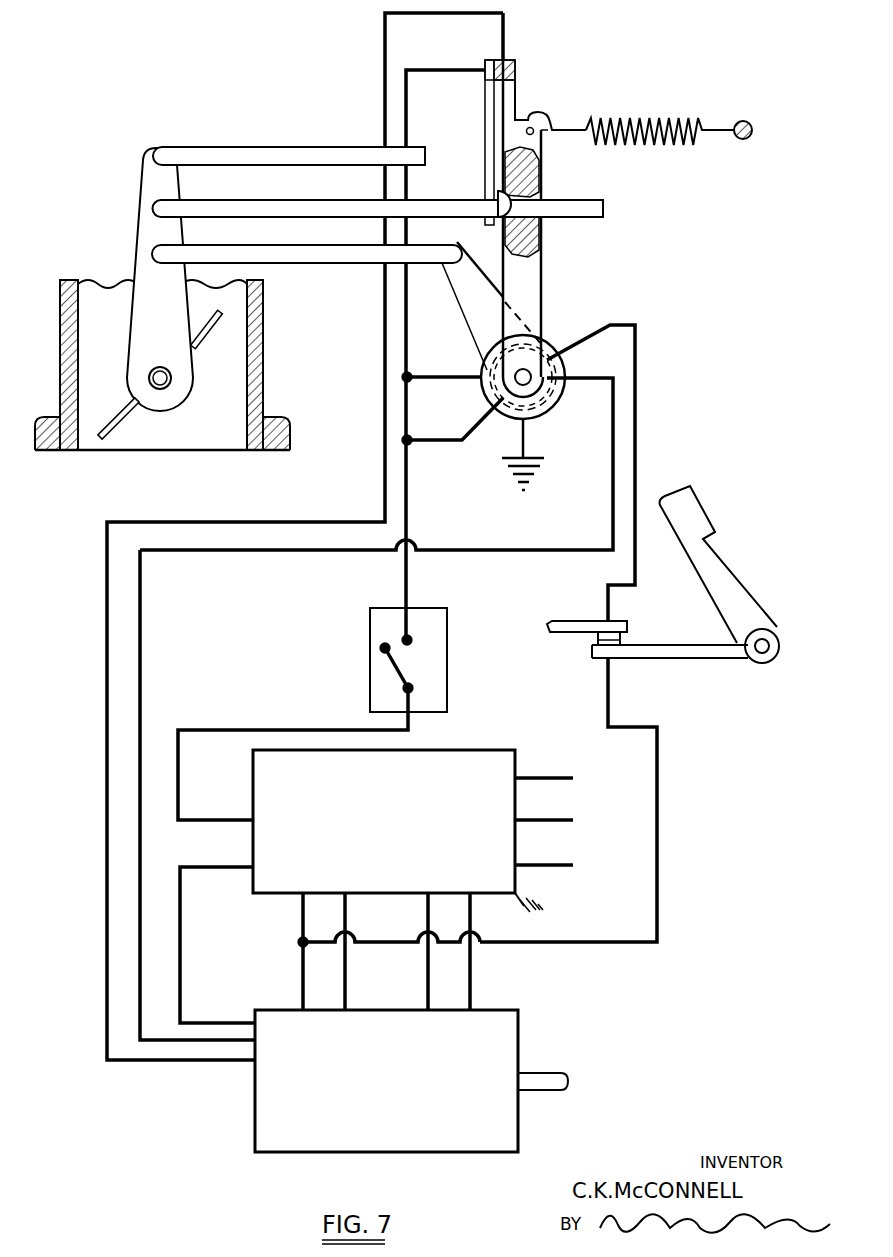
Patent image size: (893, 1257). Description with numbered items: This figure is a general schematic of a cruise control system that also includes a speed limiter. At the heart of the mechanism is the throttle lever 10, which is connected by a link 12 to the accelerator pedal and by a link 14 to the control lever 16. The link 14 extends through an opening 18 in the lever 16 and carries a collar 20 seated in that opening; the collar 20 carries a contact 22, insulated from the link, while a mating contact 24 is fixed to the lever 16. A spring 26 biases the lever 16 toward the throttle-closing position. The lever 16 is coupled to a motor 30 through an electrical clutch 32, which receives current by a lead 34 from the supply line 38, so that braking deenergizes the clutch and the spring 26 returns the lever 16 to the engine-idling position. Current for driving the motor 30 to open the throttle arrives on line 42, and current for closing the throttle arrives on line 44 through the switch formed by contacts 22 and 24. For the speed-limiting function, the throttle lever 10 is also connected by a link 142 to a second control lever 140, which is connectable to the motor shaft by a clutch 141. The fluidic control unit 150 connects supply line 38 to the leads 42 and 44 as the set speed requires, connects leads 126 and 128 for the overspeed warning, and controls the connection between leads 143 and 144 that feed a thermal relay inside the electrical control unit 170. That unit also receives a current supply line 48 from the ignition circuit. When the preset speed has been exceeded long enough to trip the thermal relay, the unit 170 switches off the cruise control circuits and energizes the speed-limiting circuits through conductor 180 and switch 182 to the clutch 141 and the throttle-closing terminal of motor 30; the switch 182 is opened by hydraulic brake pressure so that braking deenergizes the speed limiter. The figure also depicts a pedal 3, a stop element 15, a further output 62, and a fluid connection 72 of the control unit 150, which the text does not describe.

The foot pedal 3 is at (700, 507).
The throttle lever 10 is at (147, 232).
The link 12 is at (250, 158).
The link 14 is at (280, 208).
The pedal stop contact 15 is at (626, 640).
The control lever 16 is at (532, 286).
The opening 18 is at (544, 220).
The collar 20 is at (506, 206).
The contact 22 is at (488, 68).
The contact 24 is at (512, 68).
The spring 26 is at (632, 120).
The motor 30 is at (540, 418).
The electrical clutch 32 is at (498, 390).
The lead 34 is at (655, 450).
The line 38 is at (303, 969).
The line 42 is at (590, 378).
The line 44 is at (383, 341).
The current supply line 48 is at (553, 778).
The output line 62 is at (553, 866).
The fluid outlet 72 is at (545, 1078).
The lead 126 is at (427, 962).
The lead 128 is at (348, 923).
The second control lever 140 is at (476, 306).
The clutch 141 is at (553, 398).
The link 142 is at (318, 262).
The lead 143 is at (472, 960).
The lead 144 is at (182, 921).
The fluidic control unit 150 is at (488, 1145).
The electrical control unit 170 is at (477, 756).
The conductor 180 is at (258, 728).
The switch 182 is at (372, 625).